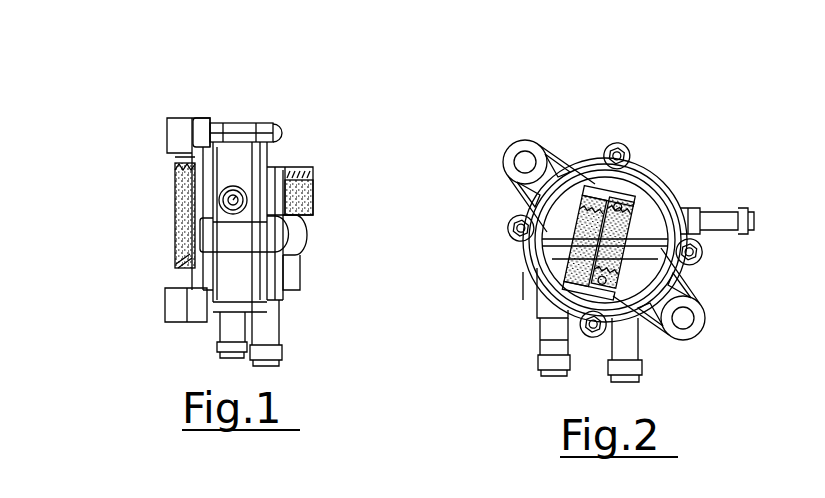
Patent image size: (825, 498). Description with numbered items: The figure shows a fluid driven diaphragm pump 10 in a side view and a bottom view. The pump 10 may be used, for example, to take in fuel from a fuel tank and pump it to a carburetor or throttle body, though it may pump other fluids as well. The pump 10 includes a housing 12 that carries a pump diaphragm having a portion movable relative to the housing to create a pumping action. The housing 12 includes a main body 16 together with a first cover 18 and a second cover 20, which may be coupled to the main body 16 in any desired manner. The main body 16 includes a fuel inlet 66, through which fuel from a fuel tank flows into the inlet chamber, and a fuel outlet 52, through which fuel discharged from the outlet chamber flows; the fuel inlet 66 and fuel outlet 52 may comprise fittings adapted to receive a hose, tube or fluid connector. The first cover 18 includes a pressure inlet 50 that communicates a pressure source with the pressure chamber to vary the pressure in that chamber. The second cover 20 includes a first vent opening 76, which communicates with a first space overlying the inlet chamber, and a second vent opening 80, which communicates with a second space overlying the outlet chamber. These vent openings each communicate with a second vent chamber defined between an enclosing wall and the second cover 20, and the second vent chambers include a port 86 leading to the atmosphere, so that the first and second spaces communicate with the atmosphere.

In FIG. 1, the fluid driven diaphragm pump 10 is at (254, 211).
In FIG. 2, the fluid driven diaphragm pump 10 is at (618, 233).
In FIG. 1, the housing 12 is at (229, 118).
In FIG. 2, the housing 12 is at (523, 284).
In FIG. 1, the main body 16 is at (248, 132).
In FIG. 1, the first cover 18 is at (257, 162).
In FIG. 1, the second cover 20 is at (205, 276).
In FIG. 2, the second cover 20 is at (678, 188).
In FIG. 1, the pressure inlet 50 is at (268, 312).
In FIG. 2, the pressure inlet 50 is at (640, 350).
In FIG. 1, the fuel outlet 52 is at (230, 199).
In FIG. 2, the fuel outlet 52 is at (715, 212).
In FIG. 1, the fuel inlet 66 is at (232, 330).
In FIG. 2, the fuel inlet 66 is at (548, 345).
In FIG. 2, the first vent opening 76 is at (618, 200).
In FIG. 2, the second vent opening 80 is at (560, 292).
In FIG. 2, the port 86 is at (585, 196).